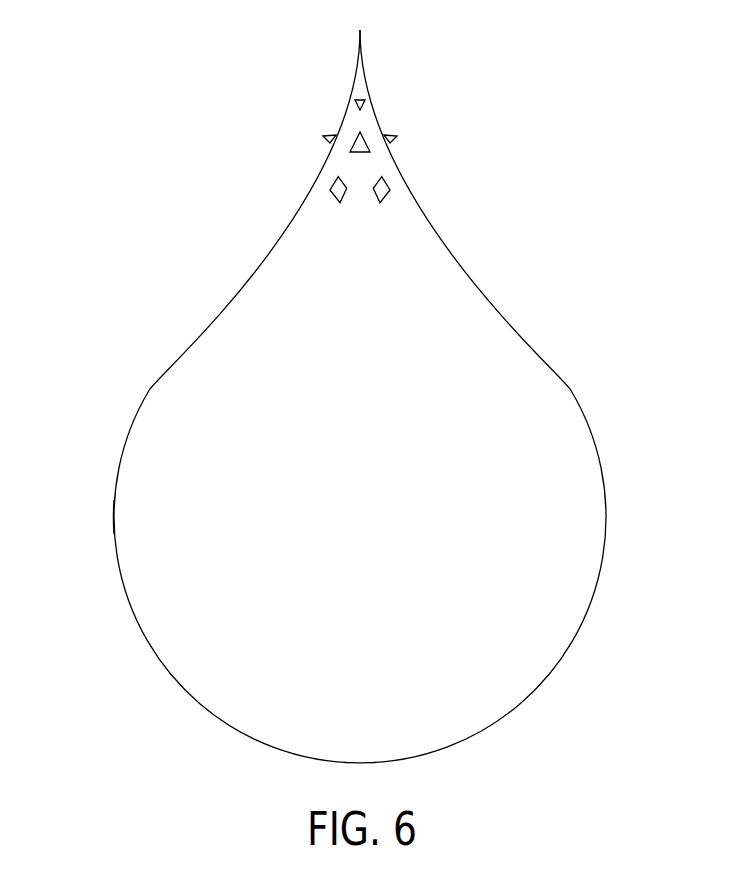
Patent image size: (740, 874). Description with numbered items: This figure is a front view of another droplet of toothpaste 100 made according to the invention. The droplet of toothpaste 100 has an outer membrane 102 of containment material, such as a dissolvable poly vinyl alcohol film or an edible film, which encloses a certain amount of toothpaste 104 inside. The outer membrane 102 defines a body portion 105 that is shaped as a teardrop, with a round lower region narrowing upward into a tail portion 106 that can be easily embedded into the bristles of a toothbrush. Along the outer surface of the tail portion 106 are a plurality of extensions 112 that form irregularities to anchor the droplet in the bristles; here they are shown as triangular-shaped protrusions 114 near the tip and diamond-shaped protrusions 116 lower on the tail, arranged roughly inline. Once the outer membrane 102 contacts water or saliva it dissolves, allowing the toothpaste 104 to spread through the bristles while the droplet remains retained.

The droplet of toothpaste 100 is at (533, 93).
The outer membrane 102 is at (601, 468).
The toothpaste 104 is at (158, 410).
The body portion 105 is at (115, 487).
The tail portion 106 is at (451, 252).
The extensions 112 is at (345, 105).
The triangular-shaped protrusions 114 is at (327, 133).
The diamond-shaped protrusions 116 is at (331, 184).